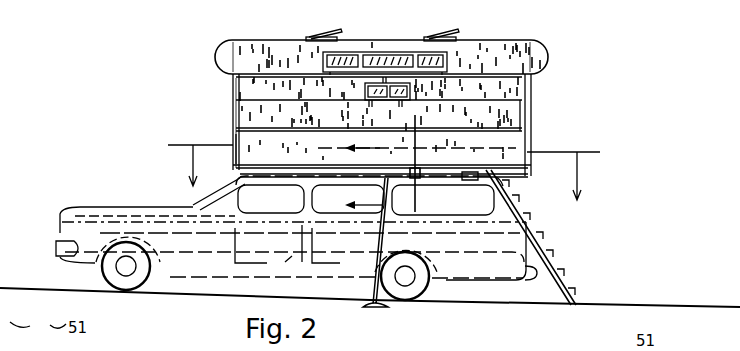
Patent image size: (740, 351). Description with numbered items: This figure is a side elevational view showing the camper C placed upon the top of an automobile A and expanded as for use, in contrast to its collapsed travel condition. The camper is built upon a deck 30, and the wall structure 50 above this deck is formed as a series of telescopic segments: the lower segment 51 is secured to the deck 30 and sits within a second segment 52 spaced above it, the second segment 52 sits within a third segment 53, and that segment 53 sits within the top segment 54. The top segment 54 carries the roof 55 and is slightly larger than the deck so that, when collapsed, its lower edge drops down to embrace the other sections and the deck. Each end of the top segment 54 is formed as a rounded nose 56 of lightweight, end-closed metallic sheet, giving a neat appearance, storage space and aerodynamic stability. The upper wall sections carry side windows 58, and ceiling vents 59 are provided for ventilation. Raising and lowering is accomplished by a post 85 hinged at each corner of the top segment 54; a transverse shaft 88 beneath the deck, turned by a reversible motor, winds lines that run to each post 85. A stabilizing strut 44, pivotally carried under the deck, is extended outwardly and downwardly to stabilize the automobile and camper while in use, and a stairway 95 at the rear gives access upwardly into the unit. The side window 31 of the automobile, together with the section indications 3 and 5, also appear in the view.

The automobile A is at (188, 202).
The camper C is at (219, 42).
The deck 30 is at (433, 153).
The side window of vehicle 31 is at (286, 172).
The stabilizing strut 44 is at (379, 243).
The wall structure 50 is at (268, 113).
The lower segment 51 is at (518, 149).
The second segment 52 is at (510, 125).
The third segment 53 is at (506, 91).
The top segment 54 is at (483, 55).
The roof 55 is at (362, 18).
The rounded nose 56 is at (230, 53).
The side windows 58 is at (393, 54).
The ceiling vents 59 is at (336, 36).
The post 85 is at (238, 87).
The transverse shaft 88 is at (470, 176).
The stairway 95 is at (535, 237).
The section line 3- 3 is at (352, 177).
The section line 5- 5 is at (384, 172).